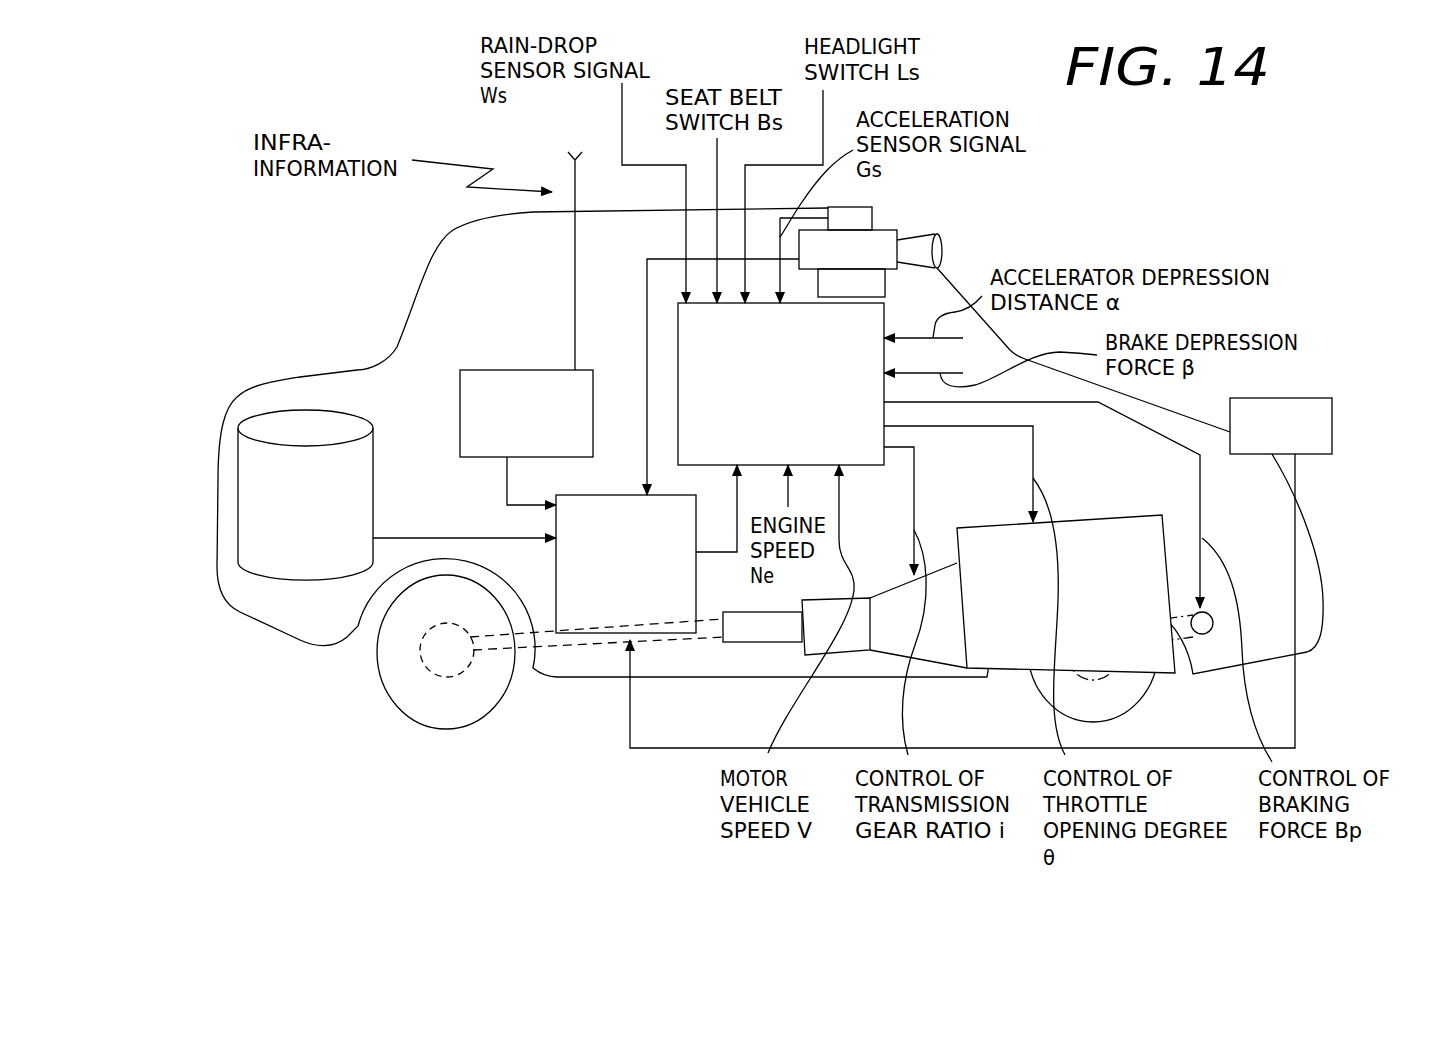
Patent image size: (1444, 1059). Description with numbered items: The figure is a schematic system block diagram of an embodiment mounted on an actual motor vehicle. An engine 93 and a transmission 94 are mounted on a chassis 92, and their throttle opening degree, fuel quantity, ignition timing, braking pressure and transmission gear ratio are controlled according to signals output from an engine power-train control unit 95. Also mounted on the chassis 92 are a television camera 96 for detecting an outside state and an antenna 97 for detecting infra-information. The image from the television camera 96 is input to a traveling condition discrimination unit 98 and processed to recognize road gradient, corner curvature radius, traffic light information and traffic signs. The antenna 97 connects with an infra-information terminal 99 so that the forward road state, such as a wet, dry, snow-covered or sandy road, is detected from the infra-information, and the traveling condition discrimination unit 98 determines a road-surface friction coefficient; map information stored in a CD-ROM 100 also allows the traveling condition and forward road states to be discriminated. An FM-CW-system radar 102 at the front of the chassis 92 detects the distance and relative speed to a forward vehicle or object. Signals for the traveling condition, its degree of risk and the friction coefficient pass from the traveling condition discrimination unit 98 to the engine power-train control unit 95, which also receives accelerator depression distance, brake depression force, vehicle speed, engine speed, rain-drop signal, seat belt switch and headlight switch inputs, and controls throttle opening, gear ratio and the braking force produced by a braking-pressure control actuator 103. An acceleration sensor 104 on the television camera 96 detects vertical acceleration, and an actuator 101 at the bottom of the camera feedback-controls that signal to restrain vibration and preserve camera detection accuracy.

The chassis 92 is at (1323, 586).
The engine 93 is at (1125, 526).
The transmission 94 is at (945, 587).
The engine power-train control unit 95 is at (678, 326).
The television camera 96 is at (890, 240).
The antenna 97 is at (570, 190).
The traveling condition discrimination unit 98 is at (612, 495).
The infra-information terminal 99 is at (593, 396).
The CD-ROM 100 is at (374, 464).
The actuator 101 is at (877, 285).
The FM-CW-system radar 102 is at (1310, 398).
The braking-pressure control actuator 103 is at (1210, 634).
The acceleration sensor 104 is at (852, 215).